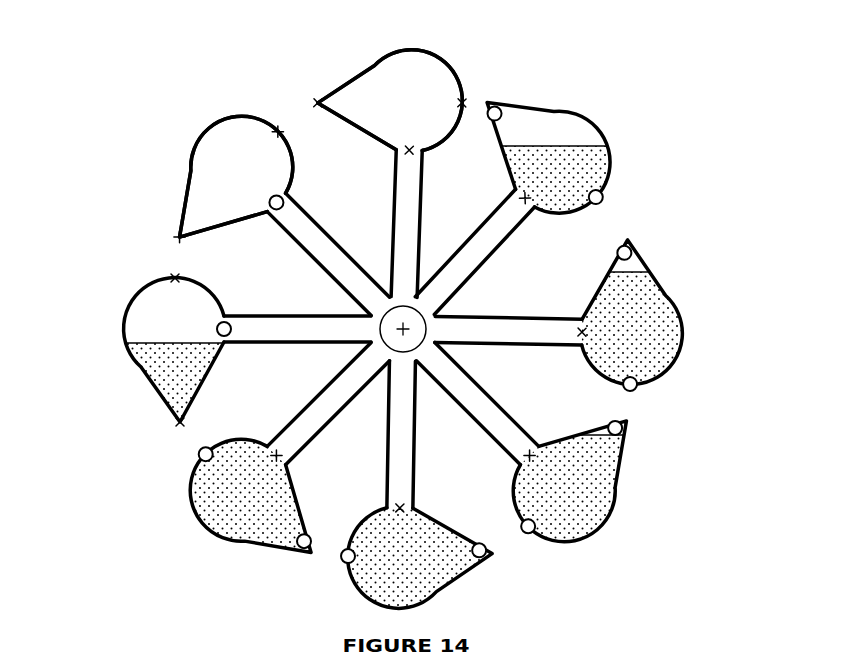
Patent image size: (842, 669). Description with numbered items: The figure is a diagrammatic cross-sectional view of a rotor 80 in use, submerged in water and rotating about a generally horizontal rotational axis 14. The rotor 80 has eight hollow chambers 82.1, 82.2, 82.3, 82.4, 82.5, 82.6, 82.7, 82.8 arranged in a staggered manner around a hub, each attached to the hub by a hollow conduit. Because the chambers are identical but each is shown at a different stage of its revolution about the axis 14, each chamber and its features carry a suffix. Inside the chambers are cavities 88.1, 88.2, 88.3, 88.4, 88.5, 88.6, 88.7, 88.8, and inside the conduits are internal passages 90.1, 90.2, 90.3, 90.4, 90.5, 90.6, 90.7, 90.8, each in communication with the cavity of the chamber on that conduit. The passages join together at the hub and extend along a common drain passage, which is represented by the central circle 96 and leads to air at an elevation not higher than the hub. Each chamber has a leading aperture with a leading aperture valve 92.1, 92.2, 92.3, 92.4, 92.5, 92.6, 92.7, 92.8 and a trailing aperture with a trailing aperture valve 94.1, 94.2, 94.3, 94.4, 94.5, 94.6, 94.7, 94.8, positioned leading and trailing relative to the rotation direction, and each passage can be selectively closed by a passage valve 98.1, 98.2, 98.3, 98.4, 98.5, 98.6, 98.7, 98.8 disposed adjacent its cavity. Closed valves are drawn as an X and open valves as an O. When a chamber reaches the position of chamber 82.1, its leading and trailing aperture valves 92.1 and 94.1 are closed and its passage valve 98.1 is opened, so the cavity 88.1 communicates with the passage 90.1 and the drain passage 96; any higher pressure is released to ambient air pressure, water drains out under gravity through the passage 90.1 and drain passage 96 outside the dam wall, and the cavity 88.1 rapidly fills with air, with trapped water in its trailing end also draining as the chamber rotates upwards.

The rotor 80 is at (120, 127).
The rotational axis 14 is at (382, 338).
The drain passage 96 is at (450, 316).
The chamber 82.1 is at (122, 330).
The chamber 82.2 is at (203, 135).
The chamber 82.3 is at (430, 65).
The chamber 82.4 is at (582, 113).
The chamber 82.5 is at (687, 319).
The chamber 82.6 is at (620, 507).
The chamber 82.7 is at (452, 580).
The chamber 82.8 is at (255, 548).
The cavity 88.1 is at (175, 375).
The cavity 88.2 is at (226, 181).
The cavity 88.3 is at (390, 99).
The cavity 88.4 is at (557, 169).
The cavity 88.5 is at (636, 284).
The cavity 88.6 is at (601, 476).
The cavity 88.7 is at (446, 536).
The cavity 88.8 is at (216, 508).
The passage 90.1 is at (315, 325).
The passage 90.2 is at (343, 254).
The passage 90.3 is at (410, 240).
The passage 90.4 is at (488, 250).
The passage 90.5 is at (490, 339).
The passage 90.6 is at (457, 393).
The passage 90.7 is at (398, 451).
The passage 90.8 is at (320, 407).
The leading aperture valve 92.1 is at (170, 278).
The leading aperture valve 92.2 is at (266, 125).
The leading aperture valve 92.3 is at (465, 97).
The leading aperture valve 92.4 is at (607, 190).
The leading aperture valve 92.5 is at (645, 382).
The leading aperture valve 92.6 is at (542, 533).
The leading aperture valve 92.7 is at (350, 562).
The leading aperture valve 92.8 is at (203, 458).
The trailing aperture valve 94.1 is at (171, 423).
The trailing aperture valve 94.2 is at (177, 240).
The trailing aperture valve 94.3 is at (318, 92).
The trailing aperture valve 94.4 is at (492, 117).
The trailing aperture valve 94.5 is at (640, 238).
The trailing aperture valve 94.6 is at (636, 422).
The trailing aperture valve 94.7 is at (492, 560).
The trailing aperture valve 94.8 is at (306, 562).
The passage valve 98.1 is at (228, 346).
The passage valve 98.2 is at (269, 226).
The passage valve 98.3 is at (393, 152).
The passage valve 98.4 is at (528, 207).
The passage valve 98.5 is at (580, 338).
The passage valve 98.6 is at (522, 452).
The passage valve 98.7 is at (390, 505).
The passage valve 98.8 is at (275, 454).